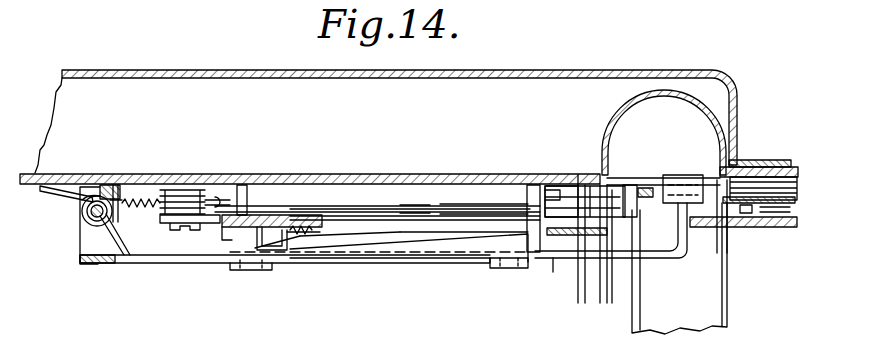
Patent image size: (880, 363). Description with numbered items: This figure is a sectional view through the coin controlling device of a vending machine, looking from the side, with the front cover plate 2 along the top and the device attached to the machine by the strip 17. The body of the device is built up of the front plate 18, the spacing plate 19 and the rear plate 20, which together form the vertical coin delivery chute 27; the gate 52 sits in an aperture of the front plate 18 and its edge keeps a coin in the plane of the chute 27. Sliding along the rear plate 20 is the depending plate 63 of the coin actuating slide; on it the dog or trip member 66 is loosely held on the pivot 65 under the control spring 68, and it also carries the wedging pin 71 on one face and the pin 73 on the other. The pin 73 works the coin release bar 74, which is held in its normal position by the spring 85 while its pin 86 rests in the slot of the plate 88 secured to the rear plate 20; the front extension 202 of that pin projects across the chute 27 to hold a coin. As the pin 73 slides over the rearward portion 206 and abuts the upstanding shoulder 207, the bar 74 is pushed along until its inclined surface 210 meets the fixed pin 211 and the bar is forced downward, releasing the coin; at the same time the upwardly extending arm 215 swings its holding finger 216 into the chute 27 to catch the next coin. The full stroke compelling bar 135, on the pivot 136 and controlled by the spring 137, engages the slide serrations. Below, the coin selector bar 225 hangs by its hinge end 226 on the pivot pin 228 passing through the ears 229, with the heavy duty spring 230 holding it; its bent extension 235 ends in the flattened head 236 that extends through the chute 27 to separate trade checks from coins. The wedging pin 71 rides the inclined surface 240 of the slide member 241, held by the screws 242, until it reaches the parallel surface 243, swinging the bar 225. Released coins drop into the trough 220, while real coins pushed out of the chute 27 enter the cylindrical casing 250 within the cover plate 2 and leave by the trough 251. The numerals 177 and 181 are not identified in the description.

The front cover plate 2 is at (300, 70).
The strip 17 is at (800, 172).
The front plate 18 is at (390, 176).
The spacing plate 19 is at (588, 186).
The rear plate 20 is at (598, 190).
The coin delivery chute 27 is at (748, 228).
The gate 52 is at (655, 188).
The depending plate 63 is at (300, 215).
The pivot 65 is at (258, 240).
The dog or trip member 66 is at (228, 233).
The control spring 68 is at (318, 234).
The wedging pin 71 is at (292, 258).
The pin 73 is at (248, 190).
The coin release bar 74 is at (420, 212).
The spring 85 is at (145, 208).
The pin 86 is at (717, 236).
The plate 88 is at (778, 228).
The full stroke compelling bar 135 is at (410, 222).
The pivot 136 is at (168, 230).
The spring 137 is at (165, 178).
The rod 177 is at (590, 300).
The bar 181 is at (577, 239).
The front extension of pin 202 is at (758, 162).
The rearward portion of bar 206 is at (272, 210).
The upstanding shoulder 207 is at (325, 210).
The inclined surface 210 is at (504, 208).
The pin 211 is at (527, 190).
The upwardly extending arm 215 is at (543, 178).
The holding finger 216 is at (676, 238).
The trough 220 is at (666, 326).
The coin selector bar 225 is at (168, 265).
The hinge end 226 is at (86, 265).
The pivot pin 228 is at (82, 214).
The ears 229 is at (85, 222).
The heavy duty spring 230 is at (60, 192).
The extension 235 is at (688, 256).
The head 236 is at (655, 175).
The inclined surface 240 is at (330, 255).
The slide member 241 is at (405, 255).
The screws 242 is at (248, 271).
The surface 243 is at (455, 236).
The cylindrical casing 250 is at (625, 100).
The trough 251 is at (612, 303).